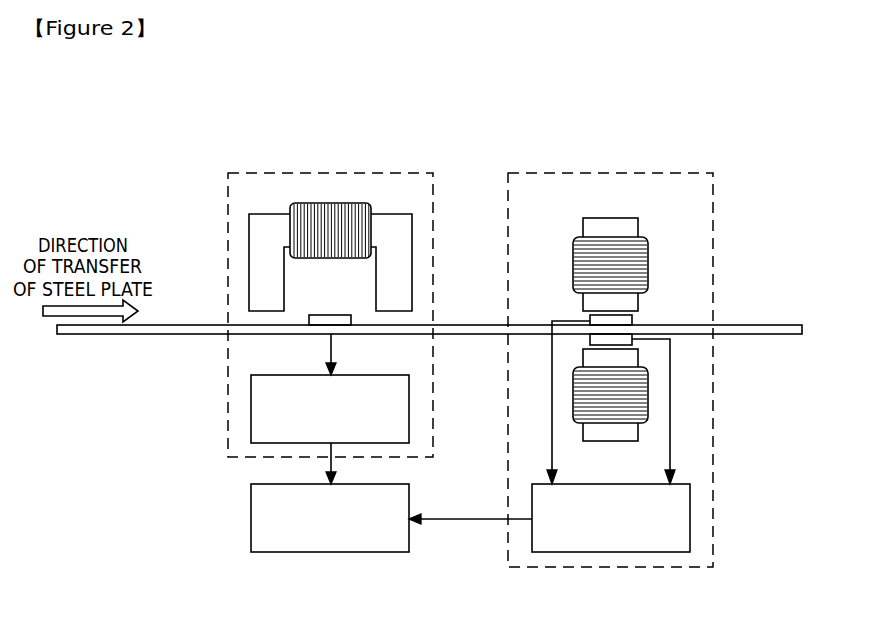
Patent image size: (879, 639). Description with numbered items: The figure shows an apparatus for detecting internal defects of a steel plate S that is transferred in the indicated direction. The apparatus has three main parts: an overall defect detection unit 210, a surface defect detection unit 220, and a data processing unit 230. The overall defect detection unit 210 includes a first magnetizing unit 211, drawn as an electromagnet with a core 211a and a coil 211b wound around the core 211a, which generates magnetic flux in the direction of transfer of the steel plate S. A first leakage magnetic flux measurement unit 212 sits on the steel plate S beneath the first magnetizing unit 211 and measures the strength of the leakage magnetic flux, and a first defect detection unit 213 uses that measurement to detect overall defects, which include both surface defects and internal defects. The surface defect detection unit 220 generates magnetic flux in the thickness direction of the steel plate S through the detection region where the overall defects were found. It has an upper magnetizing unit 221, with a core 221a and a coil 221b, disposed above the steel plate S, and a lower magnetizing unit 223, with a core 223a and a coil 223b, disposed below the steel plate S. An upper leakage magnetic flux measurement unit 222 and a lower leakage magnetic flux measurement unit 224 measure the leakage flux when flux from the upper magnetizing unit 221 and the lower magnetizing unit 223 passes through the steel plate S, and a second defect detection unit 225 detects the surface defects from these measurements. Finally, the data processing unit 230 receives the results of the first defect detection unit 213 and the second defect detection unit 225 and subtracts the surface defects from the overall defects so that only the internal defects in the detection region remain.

The steel plate S is at (768, 325).
The overall defect detection unit 210 is at (227, 173).
The first magnetizing unit 211 is at (160, 198).
The core 211a is at (258, 244).
The coil 211b is at (290, 228).
The first leakage magnetic flux measurement unit 212 is at (305, 321).
The first defect detection unit 213 is at (251, 413).
The surface defect detection unit 220 is at (697, 173).
The upper magnetizing unit 221 is at (782, 198).
The core 221a is at (638, 230).
The coil 221b is at (648, 260).
The upper leakage magnetic flux measurement unit 222 is at (632, 322).
The lower magnetizing unit 223 is at (782, 410).
The core 223a is at (638, 430).
The coil 223b is at (648, 400).
The lower leakage magnetic flux measurement unit 224 is at (595, 340).
The second defect detection unit 225 is at (610, 552).
The data processing unit 230 is at (251, 521).